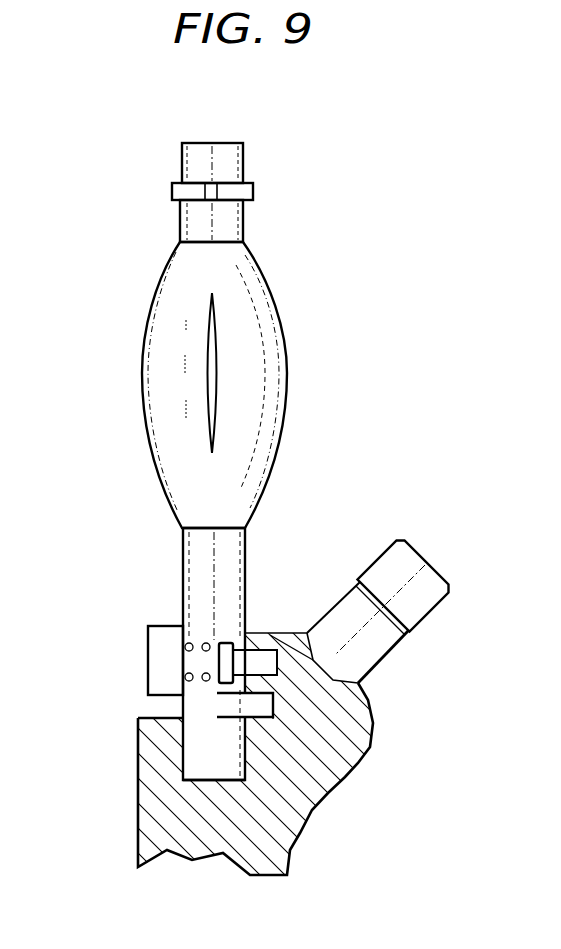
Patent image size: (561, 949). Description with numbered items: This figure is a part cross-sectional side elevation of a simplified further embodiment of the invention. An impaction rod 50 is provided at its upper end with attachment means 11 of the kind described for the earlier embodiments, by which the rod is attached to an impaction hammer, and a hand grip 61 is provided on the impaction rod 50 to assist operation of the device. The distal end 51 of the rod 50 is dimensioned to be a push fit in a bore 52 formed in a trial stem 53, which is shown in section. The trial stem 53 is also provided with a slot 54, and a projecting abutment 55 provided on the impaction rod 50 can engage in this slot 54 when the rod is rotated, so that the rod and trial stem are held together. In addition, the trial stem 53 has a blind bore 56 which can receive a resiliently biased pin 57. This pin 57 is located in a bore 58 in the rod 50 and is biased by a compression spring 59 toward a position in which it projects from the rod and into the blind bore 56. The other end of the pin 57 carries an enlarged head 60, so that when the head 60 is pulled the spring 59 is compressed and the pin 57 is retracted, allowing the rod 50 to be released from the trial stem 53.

The attachment means 11 is at (253, 193).
The hand grip 61 is at (252, 338).
The impaction rod 50 is at (260, 538).
The enlarged head 60 is at (162, 675).
The compression spring 59 is at (207, 641).
The bore 58 is at (240, 647).
The resiliently biased pin 57 is at (258, 663).
The blind bore 56 is at (257, 633).
The projecting abutment 55 is at (258, 705).
The slot 54 is at (273, 719).
The trial stem 53 is at (290, 834).
The bore 52 is at (140, 720).
The distal end 51 is at (198, 760).